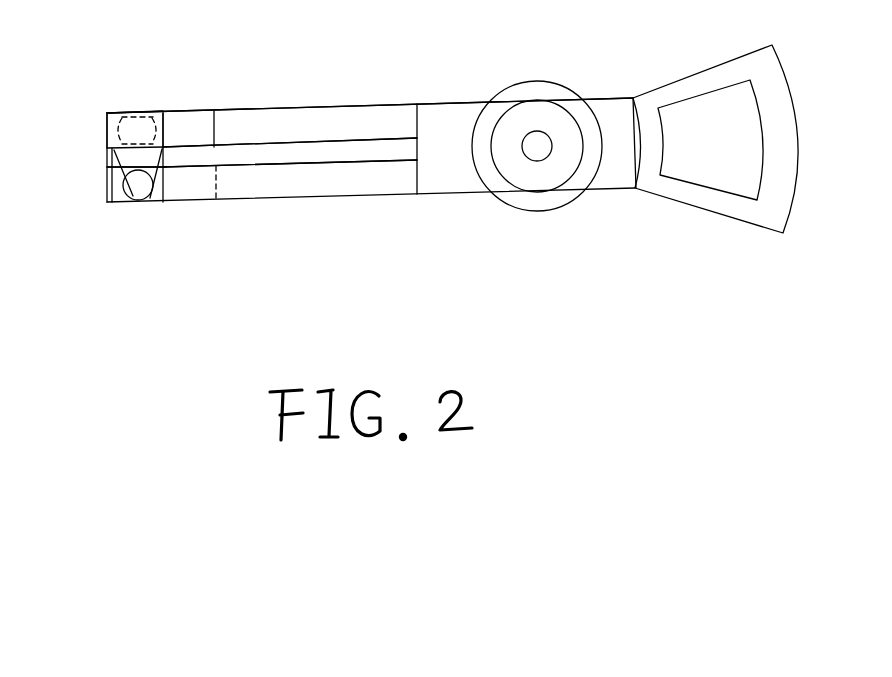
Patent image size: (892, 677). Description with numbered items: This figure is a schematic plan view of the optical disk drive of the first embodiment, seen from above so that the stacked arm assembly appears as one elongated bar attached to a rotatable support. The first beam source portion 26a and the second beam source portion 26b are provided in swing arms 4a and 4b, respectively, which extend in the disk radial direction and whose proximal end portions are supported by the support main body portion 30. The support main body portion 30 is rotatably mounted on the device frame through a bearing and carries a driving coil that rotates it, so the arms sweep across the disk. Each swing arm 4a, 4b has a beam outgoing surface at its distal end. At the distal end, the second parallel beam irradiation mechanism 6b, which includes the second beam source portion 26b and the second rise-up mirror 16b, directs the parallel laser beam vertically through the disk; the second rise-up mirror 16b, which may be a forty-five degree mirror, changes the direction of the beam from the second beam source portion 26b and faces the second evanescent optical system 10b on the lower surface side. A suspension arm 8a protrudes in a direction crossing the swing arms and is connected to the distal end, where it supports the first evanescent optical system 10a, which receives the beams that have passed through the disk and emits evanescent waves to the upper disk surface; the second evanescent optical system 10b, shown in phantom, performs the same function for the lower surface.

The swing arm 4a is at (242, 187).
The swing arm 4b is at (187, 122).
The second parallel beam irradiation mechanism 6b is at (332, 98).
The suspension arm 8a is at (112, 155).
The first evanescent optical system 10a is at (138, 187).
The second evanescent optical system 10b is at (130, 108).
The second rise-up mirror 16b is at (153, 113).
The first beam source portion 26a is at (335, 175).
The second beam source portion 26b is at (245, 118).
The support main body portion 30 is at (603, 98).